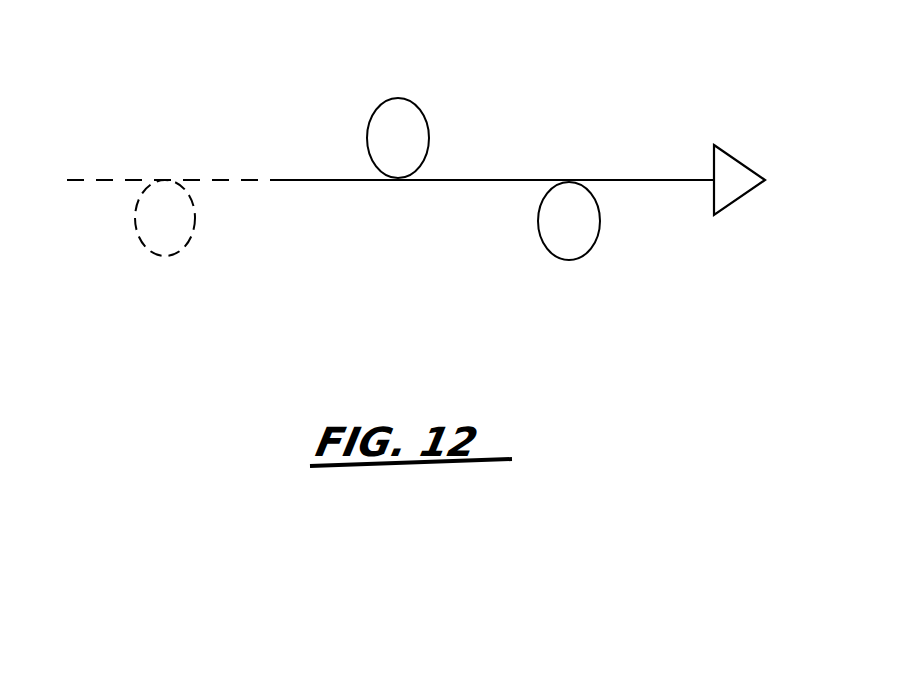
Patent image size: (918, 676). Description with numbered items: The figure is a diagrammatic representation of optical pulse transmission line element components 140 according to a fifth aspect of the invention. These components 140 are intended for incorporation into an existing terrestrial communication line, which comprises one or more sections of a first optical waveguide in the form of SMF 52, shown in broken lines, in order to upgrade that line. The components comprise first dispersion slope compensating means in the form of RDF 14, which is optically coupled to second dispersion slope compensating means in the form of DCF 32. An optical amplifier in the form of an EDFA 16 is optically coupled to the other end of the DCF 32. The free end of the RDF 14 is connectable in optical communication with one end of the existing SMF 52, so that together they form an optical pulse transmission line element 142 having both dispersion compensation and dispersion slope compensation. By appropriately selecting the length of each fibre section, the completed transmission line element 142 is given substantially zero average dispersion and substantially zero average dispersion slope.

The optical pulse transmission line element components 140 is at (523, 82).
The RDF 14 is at (379, 114).
The SMF 52 is at (170, 237).
The DCF 32 is at (576, 236).
The EDFA 16 is at (728, 168).
The optical pulse transmission line element 142 is at (409, 250).